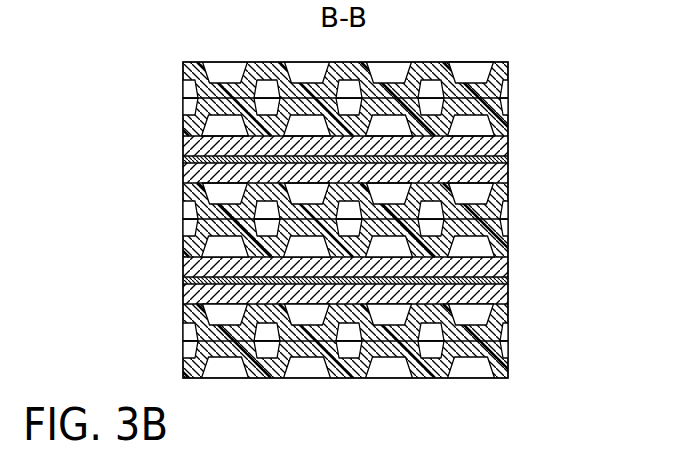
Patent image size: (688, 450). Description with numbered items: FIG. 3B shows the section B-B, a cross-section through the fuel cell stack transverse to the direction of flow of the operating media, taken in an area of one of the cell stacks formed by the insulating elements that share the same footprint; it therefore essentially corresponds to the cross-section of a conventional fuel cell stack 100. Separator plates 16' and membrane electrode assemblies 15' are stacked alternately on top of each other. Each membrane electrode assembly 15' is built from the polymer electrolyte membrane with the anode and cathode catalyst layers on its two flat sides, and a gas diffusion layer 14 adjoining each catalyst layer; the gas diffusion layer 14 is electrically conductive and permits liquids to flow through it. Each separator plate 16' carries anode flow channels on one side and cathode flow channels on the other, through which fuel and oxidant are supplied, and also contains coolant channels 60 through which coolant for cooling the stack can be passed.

The fuel cell stack 100 is at (168, 89).
The coolant channels 60 is at (425, 89).
The separator plate 16' is at (345, 225).
The membrane electrode assembly 15' is at (310, 280).
The gas diffusion layer 14 is at (499, 267).